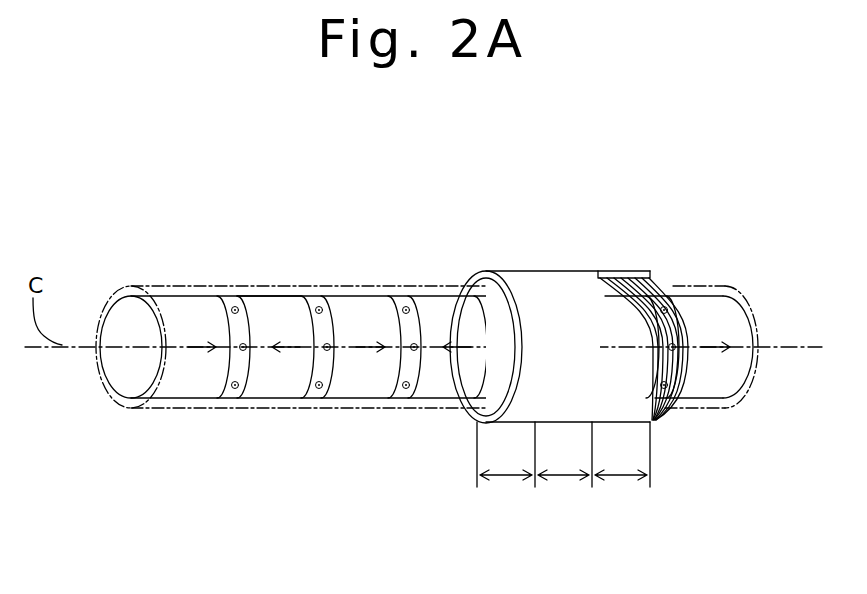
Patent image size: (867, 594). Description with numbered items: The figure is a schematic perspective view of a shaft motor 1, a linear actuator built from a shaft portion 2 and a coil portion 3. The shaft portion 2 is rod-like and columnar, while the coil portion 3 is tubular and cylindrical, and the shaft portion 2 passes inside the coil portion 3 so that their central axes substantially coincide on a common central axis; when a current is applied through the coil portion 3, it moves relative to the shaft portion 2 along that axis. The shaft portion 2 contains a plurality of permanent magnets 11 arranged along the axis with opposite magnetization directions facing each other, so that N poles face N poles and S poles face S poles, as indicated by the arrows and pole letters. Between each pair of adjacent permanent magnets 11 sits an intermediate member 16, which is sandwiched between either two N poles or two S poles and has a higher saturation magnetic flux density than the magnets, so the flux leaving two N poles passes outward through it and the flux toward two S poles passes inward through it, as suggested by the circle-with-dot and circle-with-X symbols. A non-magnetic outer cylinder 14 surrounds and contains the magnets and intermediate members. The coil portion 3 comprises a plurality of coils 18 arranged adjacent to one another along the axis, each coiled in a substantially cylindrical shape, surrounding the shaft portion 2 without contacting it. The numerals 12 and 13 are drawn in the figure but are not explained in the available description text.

The shaft motor 1 is at (81, 228).
The shaft portion 2 is at (218, 457).
The coil portion 3 is at (658, 437).
The permanent magnet 11 is at (162, 295).
The magnet block 12 is at (308, 294).
The fixing screw 13 is at (330, 318).
The outer cylinder 14 is at (342, 407).
The intermediate member 16 is at (316, 295).
The coil 18 is at (660, 282).